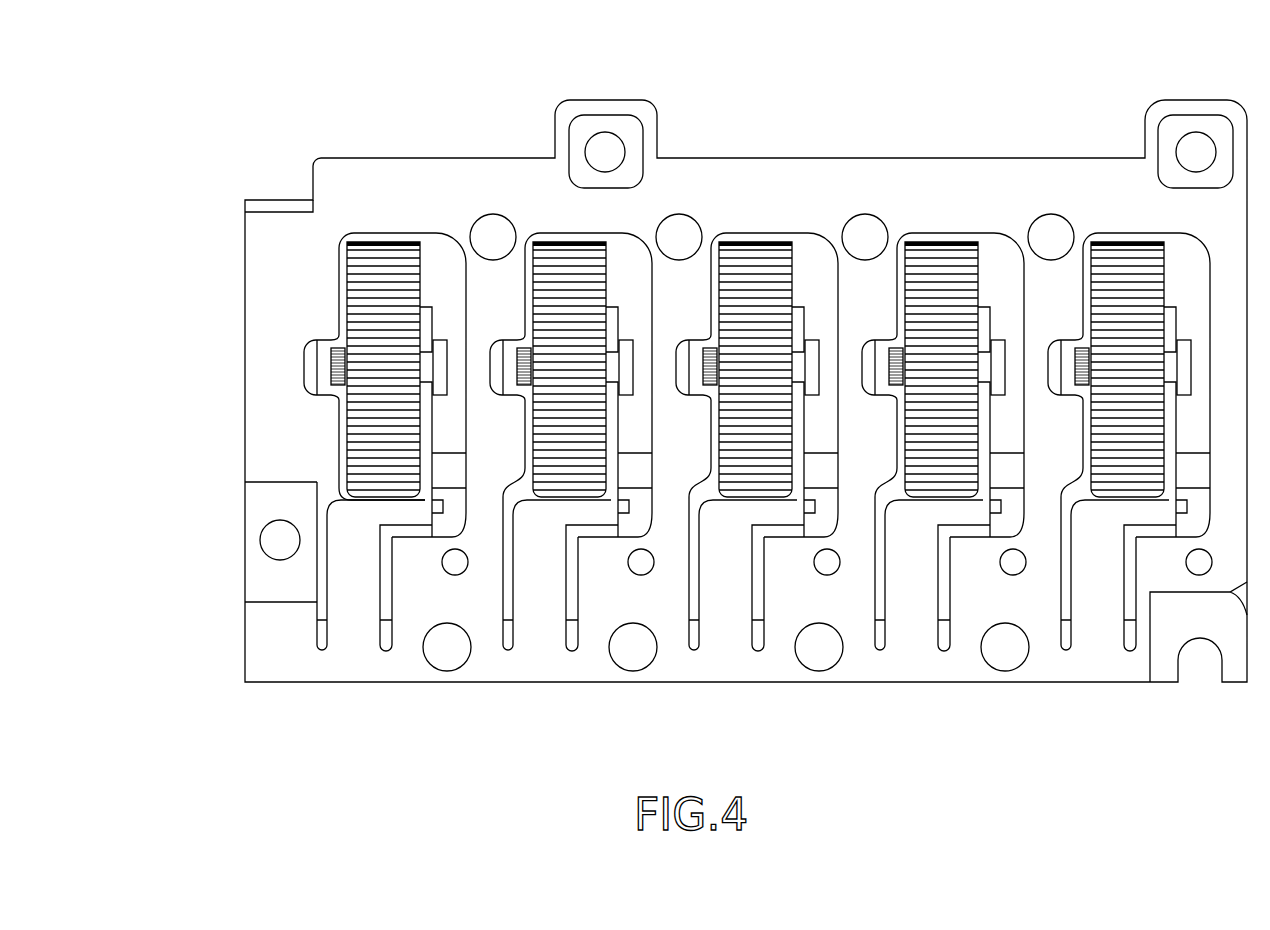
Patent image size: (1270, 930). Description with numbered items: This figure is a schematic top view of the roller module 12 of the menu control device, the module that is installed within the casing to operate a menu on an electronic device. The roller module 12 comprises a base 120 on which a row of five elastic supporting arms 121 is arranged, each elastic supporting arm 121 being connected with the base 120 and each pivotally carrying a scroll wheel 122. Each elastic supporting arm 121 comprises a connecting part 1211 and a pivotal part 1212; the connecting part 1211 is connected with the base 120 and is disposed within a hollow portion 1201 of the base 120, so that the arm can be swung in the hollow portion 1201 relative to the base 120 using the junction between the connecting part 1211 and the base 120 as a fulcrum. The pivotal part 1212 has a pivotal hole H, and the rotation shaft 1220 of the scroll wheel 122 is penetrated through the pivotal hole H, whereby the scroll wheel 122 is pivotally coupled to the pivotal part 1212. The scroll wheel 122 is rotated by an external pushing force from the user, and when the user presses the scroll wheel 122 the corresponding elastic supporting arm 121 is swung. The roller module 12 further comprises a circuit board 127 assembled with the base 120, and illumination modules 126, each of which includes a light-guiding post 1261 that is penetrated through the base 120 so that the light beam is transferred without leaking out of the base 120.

The roller module 12 is at (1089, 43).
The base 120 is at (975, 170).
The elastic supporting arm 121 is at (362, 68).
The connecting part 1211 is at (350, 562).
The pivotal part 1212 is at (672, 710).
The scroll wheel 122 is at (360, 287).
The rotation shaft 1220 is at (342, 367).
The hollow portion 1201 is at (427, 250).
The circuit board 127 is at (623, 255).
The illumination module 126 is at (362, 643).
The light-guiding post 1261 is at (452, 562).
The pivotal hole H is at (443, 375).